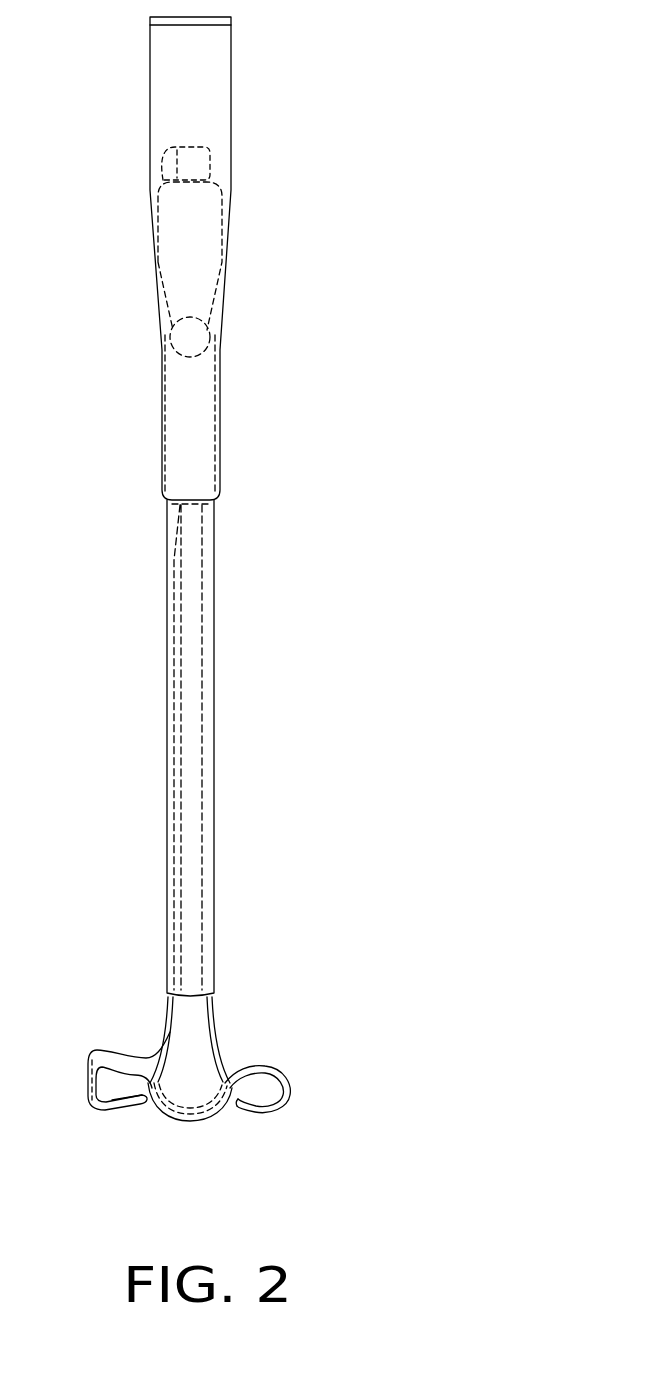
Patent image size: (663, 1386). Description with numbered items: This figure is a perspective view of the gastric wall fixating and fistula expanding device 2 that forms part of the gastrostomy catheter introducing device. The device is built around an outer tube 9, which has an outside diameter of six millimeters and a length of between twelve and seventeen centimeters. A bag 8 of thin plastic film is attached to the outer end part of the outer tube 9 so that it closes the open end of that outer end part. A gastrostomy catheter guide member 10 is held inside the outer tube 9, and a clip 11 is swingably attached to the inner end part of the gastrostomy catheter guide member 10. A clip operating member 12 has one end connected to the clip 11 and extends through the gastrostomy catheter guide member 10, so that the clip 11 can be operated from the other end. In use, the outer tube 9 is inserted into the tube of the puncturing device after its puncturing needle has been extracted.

The gastric wall fixating and fistula expanding device 2 is at (252, 418).
The bag 8 is at (208, 66).
The outer tube 9 is at (208, 612).
The gastrostomy catheter guide member 10 is at (204, 258).
The clip 11 is at (267, 1067).
The clip operating member 12 is at (188, 143).